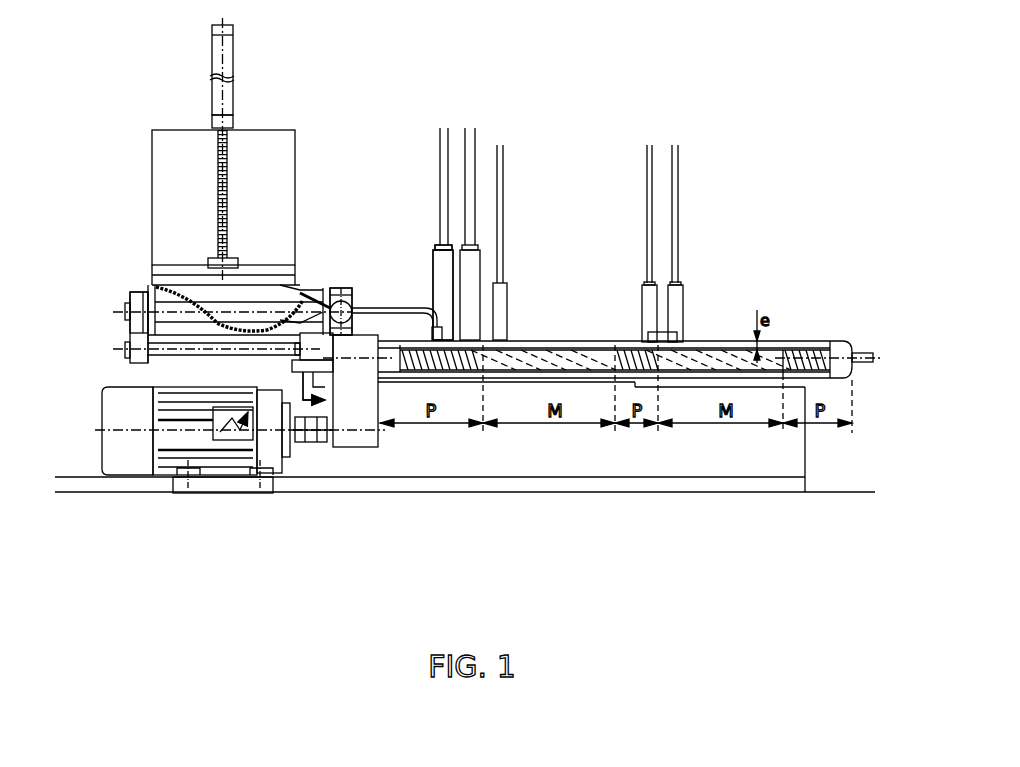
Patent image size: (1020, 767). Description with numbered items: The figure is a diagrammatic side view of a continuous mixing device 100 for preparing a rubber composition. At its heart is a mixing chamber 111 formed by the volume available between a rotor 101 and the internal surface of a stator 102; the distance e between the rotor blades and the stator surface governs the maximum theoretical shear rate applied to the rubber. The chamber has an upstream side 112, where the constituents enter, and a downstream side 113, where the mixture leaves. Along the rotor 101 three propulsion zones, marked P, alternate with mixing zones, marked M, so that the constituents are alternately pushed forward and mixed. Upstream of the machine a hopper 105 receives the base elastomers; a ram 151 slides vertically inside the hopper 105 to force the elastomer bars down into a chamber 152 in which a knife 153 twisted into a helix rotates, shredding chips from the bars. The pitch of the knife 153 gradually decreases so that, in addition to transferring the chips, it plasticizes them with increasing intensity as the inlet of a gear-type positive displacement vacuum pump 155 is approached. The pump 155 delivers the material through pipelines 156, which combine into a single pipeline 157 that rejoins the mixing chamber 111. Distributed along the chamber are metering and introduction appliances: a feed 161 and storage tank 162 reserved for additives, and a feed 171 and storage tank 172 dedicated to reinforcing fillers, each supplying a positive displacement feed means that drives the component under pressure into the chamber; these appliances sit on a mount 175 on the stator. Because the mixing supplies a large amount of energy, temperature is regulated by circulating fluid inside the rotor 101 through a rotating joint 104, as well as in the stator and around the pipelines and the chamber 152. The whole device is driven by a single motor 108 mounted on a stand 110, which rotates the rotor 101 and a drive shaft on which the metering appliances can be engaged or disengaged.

The extrusion apparatus 100 is at (648, 92).
The rotor 101 is at (580, 360).
The stator 102 is at (552, 350).
The rotating joint 104 is at (290, 363).
The hopper 105 is at (138, 187).
The motor 108 is at (125, 453).
The stand 110 is at (202, 485).
The mixing chamber 111 is at (450, 376).
The upstream side 112 is at (440, 450).
The downstream side 113 is at (831, 446).
The ram 151 is at (172, 278).
The chamber 152 is at (170, 327).
The knife 153 is at (170, 297).
The positive displacement vacuum pump 155 is at (341, 290).
The pipeline 156 is at (352, 292).
The pipeline 157 is at (447, 322).
The feed 161 is at (480, 257).
The storage tank 162 is at (502, 170).
The feed 171 is at (442, 262).
The storage tank 172 is at (440, 147).
The sensor mount 175 is at (660, 332).